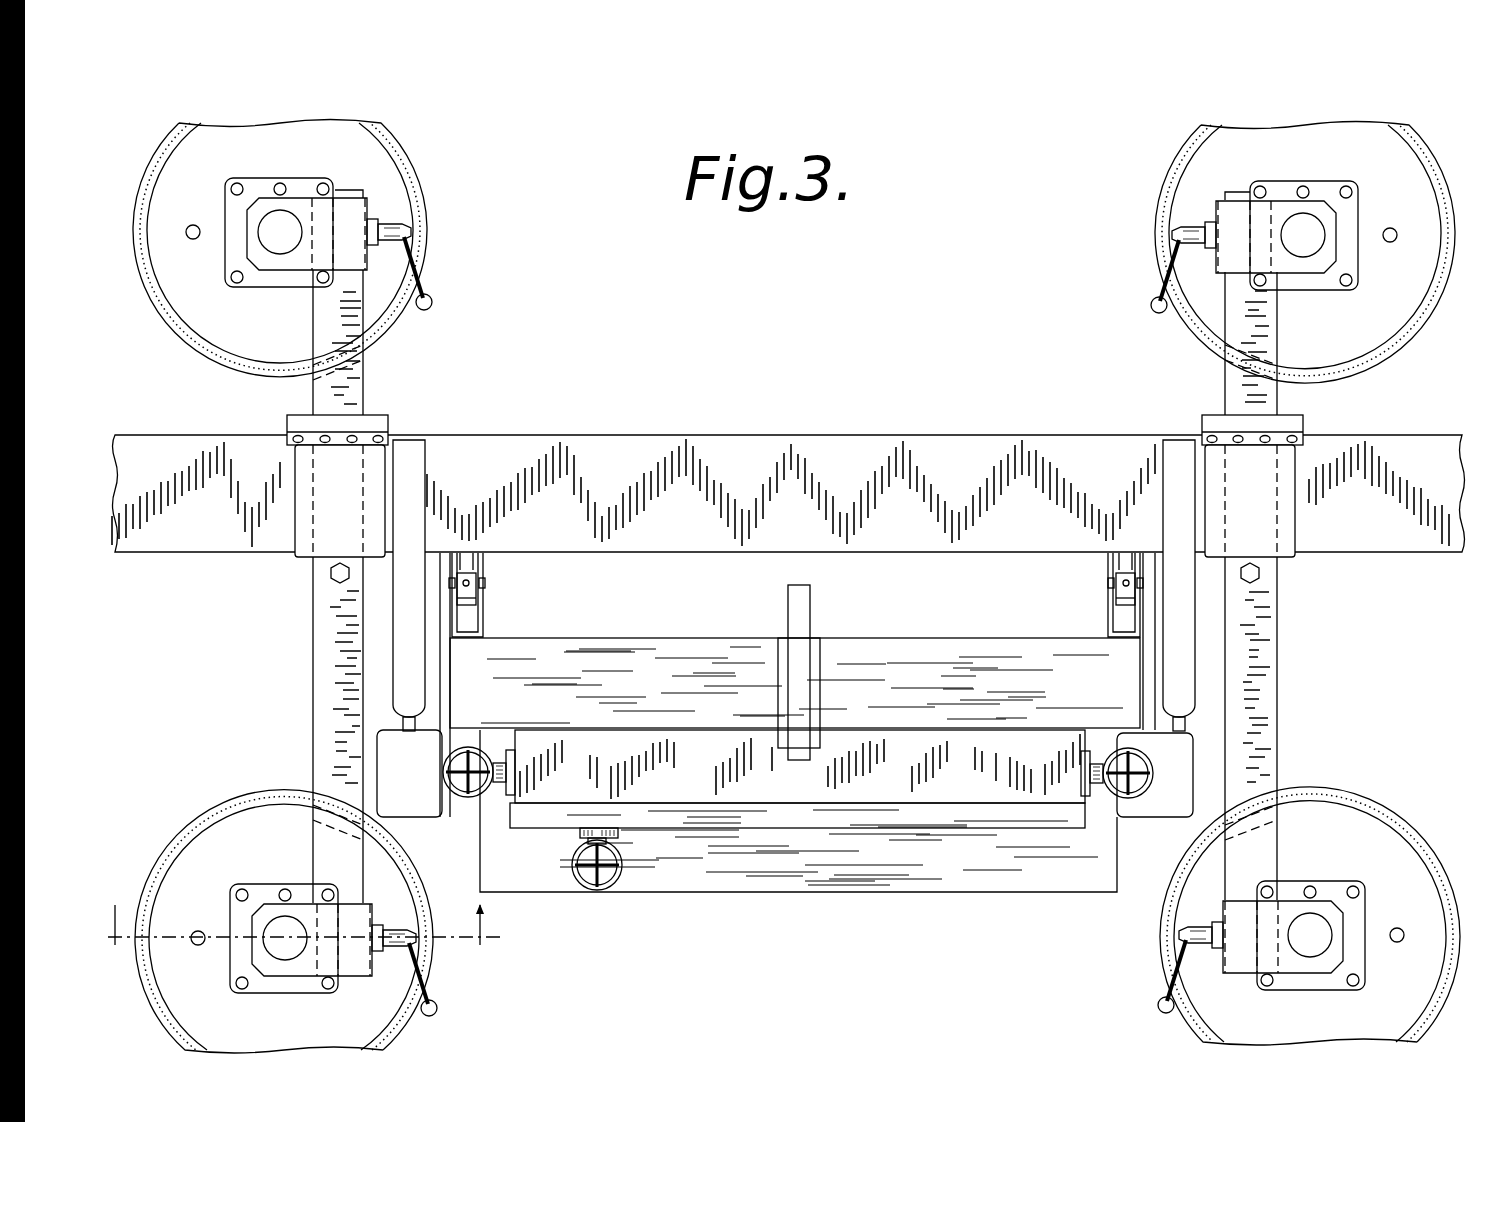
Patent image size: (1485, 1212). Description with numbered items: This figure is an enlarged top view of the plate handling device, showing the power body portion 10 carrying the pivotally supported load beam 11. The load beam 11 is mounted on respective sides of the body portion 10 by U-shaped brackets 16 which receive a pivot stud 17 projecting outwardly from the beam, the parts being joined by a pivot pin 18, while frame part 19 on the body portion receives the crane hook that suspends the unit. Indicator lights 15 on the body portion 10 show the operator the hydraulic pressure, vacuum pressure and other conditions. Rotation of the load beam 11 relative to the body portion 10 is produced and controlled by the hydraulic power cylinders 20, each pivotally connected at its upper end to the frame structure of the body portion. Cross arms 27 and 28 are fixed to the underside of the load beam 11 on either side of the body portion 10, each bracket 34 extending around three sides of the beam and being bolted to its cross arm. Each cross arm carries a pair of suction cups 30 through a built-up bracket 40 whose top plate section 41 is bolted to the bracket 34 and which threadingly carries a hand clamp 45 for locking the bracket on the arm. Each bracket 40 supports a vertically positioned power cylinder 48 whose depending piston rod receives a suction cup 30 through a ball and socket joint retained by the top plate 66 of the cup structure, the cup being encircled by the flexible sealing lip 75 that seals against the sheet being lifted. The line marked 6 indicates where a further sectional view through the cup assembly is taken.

The power body portion 10 is at (842, 865).
The load beam 11 is at (838, 467).
The indicator lights 15 is at (482, 752).
The U-shaped brackets 16 is at (487, 606).
The pivot stud 17 is at (470, 575).
The pivot pin 18 is at (488, 580).
The frame part 19 is at (812, 692).
The power cylinders 20 is at (410, 527).
The cross arm 27 is at (340, 725).
The cross arm 28 is at (1285, 705).
The suction cups 30 is at (182, 190).
The bracket 34 is at (372, 482).
The built-up bracket 40 is at (378, 895).
The top plate section 41 is at (275, 266).
The hand clamp 45 is at (425, 292).
The power cylinder 48 is at (268, 238).
The top plate 66 is at (258, 185).
The flexible sealing lip 75 is at (415, 190).
The section line 6- 6 is at (308, 909).